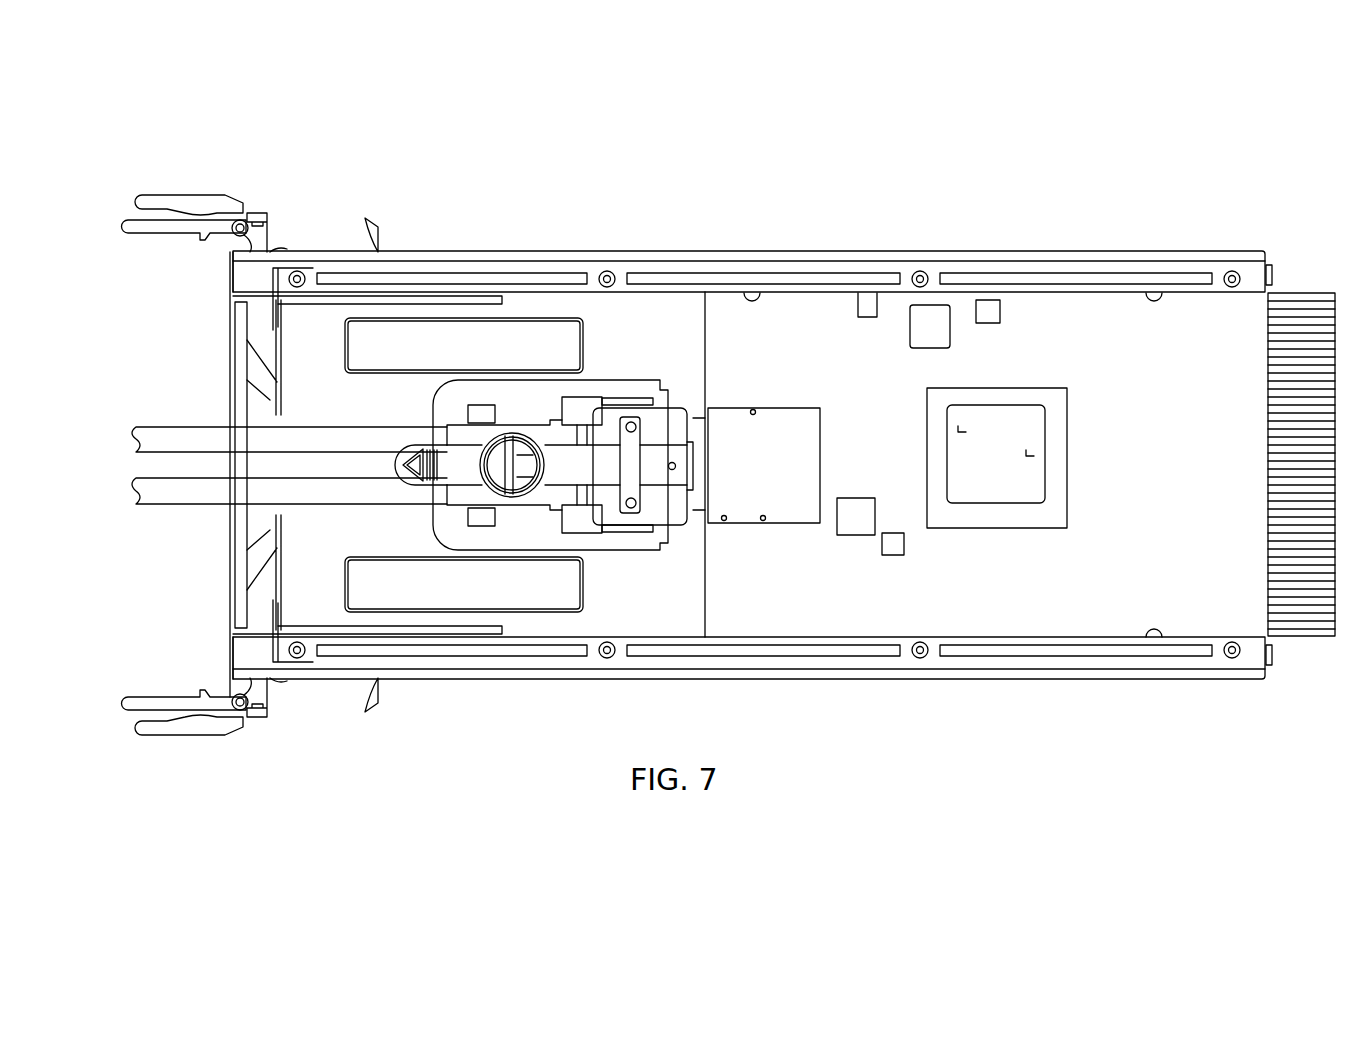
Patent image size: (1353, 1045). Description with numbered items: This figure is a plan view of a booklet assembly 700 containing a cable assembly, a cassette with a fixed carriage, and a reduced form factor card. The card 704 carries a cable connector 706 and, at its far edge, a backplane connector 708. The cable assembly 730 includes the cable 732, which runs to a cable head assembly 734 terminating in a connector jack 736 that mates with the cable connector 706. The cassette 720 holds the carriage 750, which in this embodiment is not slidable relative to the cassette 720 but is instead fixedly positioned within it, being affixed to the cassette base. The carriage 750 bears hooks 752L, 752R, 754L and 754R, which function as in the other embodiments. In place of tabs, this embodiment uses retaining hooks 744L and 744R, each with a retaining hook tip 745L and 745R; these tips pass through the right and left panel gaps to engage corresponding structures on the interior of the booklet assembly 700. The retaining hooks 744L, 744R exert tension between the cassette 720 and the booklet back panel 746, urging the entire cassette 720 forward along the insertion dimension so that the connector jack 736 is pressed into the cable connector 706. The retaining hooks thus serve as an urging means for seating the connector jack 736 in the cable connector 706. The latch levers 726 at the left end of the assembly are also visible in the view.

The booklet assembly 700 is at (1048, 135).
The card 704 is at (1123, 587).
The cable connector 706 is at (763, 497).
The backplane connector 708 is at (1308, 335).
The cassette 720 is at (549, 300).
The latch lever 726 is at (277, 325).
The cable assembly 730 is at (135, 418).
The cable 732 is at (202, 499).
The cable head assembly 734 is at (548, 486).
The connector jack 736 is at (694, 504).
The left retaining hook 744L is at (230, 350).
The right retaining hook 744R is at (230, 582).
The left retaining hook tip 745L is at (380, 236).
The right retaining hook tip 745R is at (378, 692).
The booklet back panel 746 is at (240, 413).
The carriage 750 is at (459, 381).
The left hook 752L is at (488, 406).
The right hook 752R is at (486, 527).
The left hook 754L is at (590, 398).
The right actuator 754R is at (581, 528).